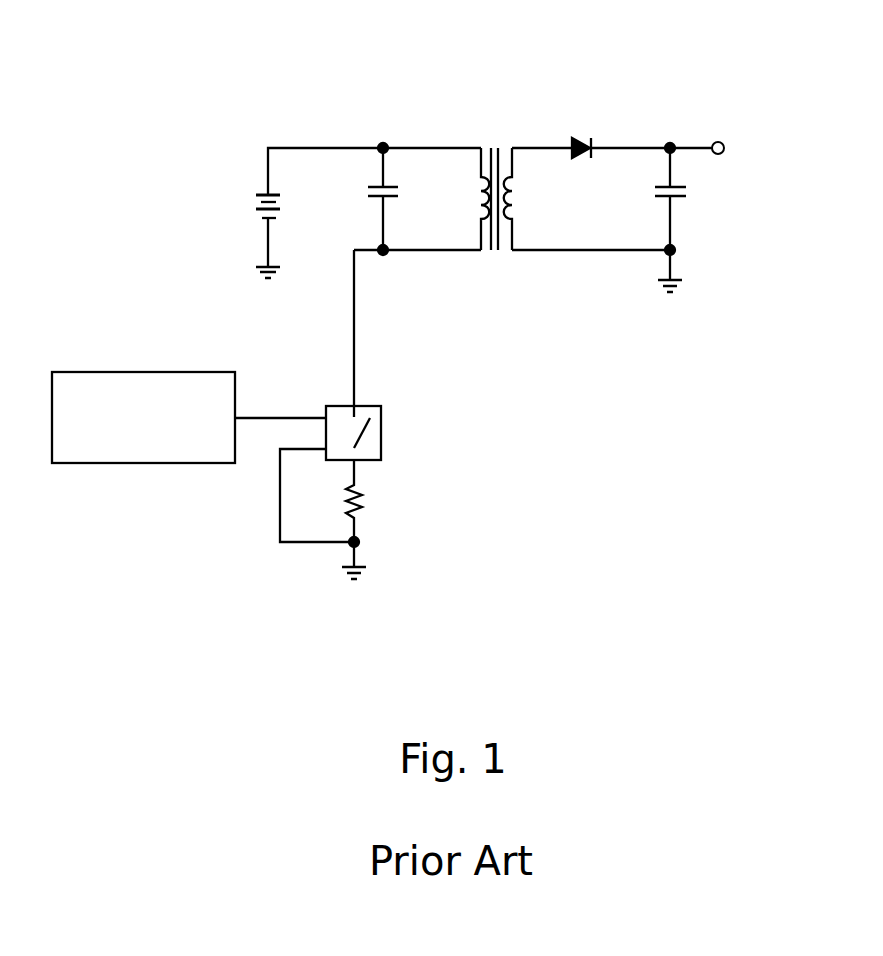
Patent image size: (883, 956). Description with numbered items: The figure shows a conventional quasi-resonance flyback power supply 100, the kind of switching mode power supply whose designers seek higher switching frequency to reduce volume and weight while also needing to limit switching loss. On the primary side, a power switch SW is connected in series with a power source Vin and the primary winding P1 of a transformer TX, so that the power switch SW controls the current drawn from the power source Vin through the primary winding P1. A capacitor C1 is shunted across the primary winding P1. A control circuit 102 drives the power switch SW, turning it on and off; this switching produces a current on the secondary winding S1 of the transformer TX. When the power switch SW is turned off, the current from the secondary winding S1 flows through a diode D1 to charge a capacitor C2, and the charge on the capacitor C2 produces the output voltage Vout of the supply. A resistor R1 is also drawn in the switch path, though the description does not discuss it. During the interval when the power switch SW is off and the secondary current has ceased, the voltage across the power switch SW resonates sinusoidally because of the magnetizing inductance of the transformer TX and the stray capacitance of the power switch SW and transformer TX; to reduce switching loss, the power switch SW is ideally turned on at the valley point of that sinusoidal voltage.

The quasi-resonance flyback power supply 100 is at (800, 100).
The control circuit 102 is at (140, 372).
The power source Vin is at (248, 207).
The capacitor C1 is at (367, 199).
The transformer TX is at (496, 184).
The primary winding P1 is at (464, 199).
The secondary winding S1 is at (529, 199).
The diode D1 is at (582, 133).
The capacitor C2 is at (655, 199).
The output voltage Vout is at (746, 146).
The power switch SW is at (362, 428).
The current sense resistor R1 is at (373, 501).